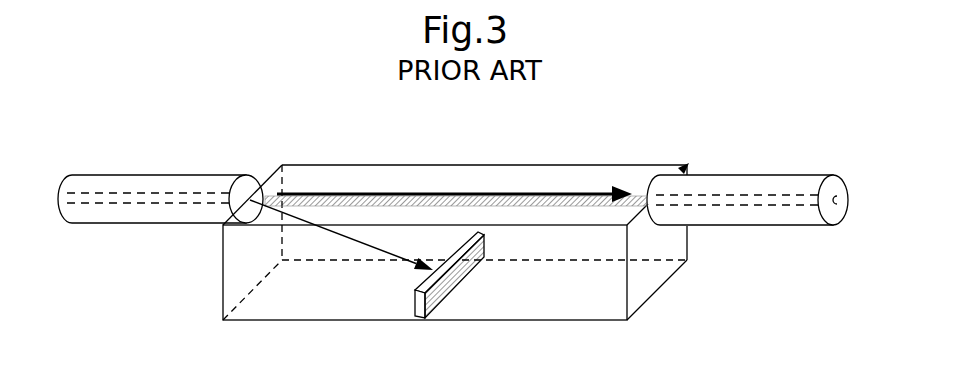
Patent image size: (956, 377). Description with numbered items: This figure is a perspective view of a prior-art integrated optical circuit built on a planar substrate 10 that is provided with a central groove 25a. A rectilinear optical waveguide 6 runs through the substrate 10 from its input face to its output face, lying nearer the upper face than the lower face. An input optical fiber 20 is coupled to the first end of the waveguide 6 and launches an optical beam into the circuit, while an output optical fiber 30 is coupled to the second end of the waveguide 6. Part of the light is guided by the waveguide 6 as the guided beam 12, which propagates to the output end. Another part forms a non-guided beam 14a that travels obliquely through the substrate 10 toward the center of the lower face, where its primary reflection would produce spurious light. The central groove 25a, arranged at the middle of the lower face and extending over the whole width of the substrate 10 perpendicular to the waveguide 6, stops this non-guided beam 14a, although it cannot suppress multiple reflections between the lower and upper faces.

The optical waveguide 6 is at (387, 183).
The planar substrate 10 is at (560, 165).
The guided beam 12 is at (463, 183).
The input optical fiber 20 is at (167, 175).
The output optical fiber 30 is at (760, 175).
The non-guided beam 14a is at (352, 233).
The central groove 25a is at (424, 316).